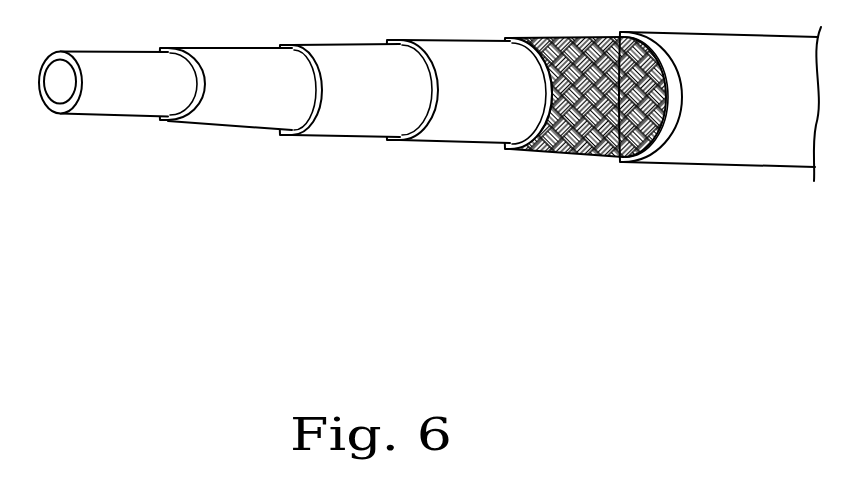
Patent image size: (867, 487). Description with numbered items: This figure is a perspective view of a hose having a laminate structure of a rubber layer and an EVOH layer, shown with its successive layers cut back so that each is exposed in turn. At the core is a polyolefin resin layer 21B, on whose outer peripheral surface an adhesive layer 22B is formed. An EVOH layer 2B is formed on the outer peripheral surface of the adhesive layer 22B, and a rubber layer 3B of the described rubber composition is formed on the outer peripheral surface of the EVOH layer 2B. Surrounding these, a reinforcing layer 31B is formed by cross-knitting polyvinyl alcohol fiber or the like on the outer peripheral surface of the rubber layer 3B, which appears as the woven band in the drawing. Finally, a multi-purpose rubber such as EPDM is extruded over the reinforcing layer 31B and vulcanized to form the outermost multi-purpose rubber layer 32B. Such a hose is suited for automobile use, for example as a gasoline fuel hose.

The polyolefin resin layer 21B is at (112, 102).
The adhesive layer 22B is at (235, 110).
The EVOH layer 2B is at (343, 122).
The rubber layer 3B is at (463, 123).
The reinforcing layer 31B is at (577, 157).
The multi-purpose rubber layer 32B is at (715, 145).